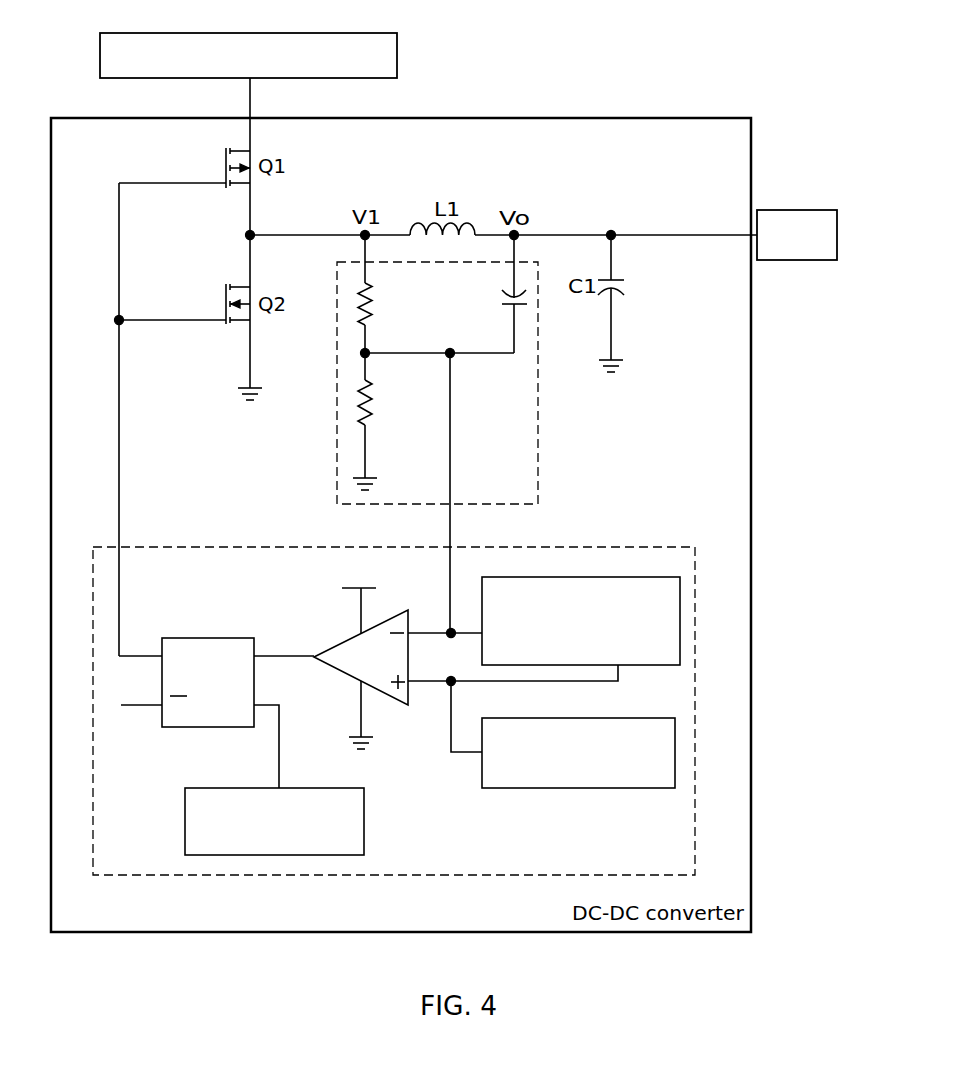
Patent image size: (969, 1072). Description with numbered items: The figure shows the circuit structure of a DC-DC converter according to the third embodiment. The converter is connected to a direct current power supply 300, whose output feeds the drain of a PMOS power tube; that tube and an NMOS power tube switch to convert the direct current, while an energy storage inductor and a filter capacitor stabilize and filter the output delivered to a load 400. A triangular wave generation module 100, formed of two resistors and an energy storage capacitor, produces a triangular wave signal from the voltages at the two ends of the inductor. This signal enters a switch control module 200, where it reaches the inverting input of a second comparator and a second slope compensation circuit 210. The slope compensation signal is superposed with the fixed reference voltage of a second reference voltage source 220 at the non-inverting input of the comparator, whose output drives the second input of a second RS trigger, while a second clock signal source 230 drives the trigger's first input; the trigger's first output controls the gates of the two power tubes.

The direct current power supply 300 is at (250, 33).
The load 400 is at (798, 210).
The triangular wave generation module 100 is at (538, 434).
The switch control module 200 is at (394, 694).
The second slope compensation circuit 210 is at (616, 578).
The second reference voltage source 220 is at (622, 718).
The second clock signal source 230 is at (308, 788).